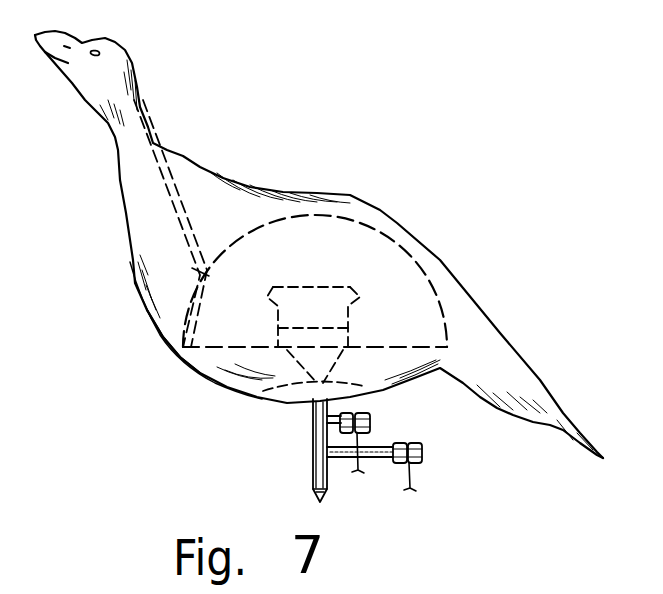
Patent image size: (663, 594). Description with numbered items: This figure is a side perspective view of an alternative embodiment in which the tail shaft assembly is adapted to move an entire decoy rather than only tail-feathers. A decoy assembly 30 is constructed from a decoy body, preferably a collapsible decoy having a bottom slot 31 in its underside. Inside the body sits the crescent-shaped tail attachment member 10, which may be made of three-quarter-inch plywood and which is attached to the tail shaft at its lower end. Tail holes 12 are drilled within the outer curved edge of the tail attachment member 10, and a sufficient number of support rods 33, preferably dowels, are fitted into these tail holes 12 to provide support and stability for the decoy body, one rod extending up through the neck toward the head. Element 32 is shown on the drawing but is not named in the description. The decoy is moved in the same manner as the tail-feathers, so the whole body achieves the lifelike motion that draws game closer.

The decoy assembly 30 is at (480, 222).
The tail attachment member 10 is at (447, 326).
The tail holes 12 is at (201, 270).
The support rods 33 is at (157, 168).
The decoy body shell 32 is at (163, 338).
The bottom slot 31 is at (293, 398).